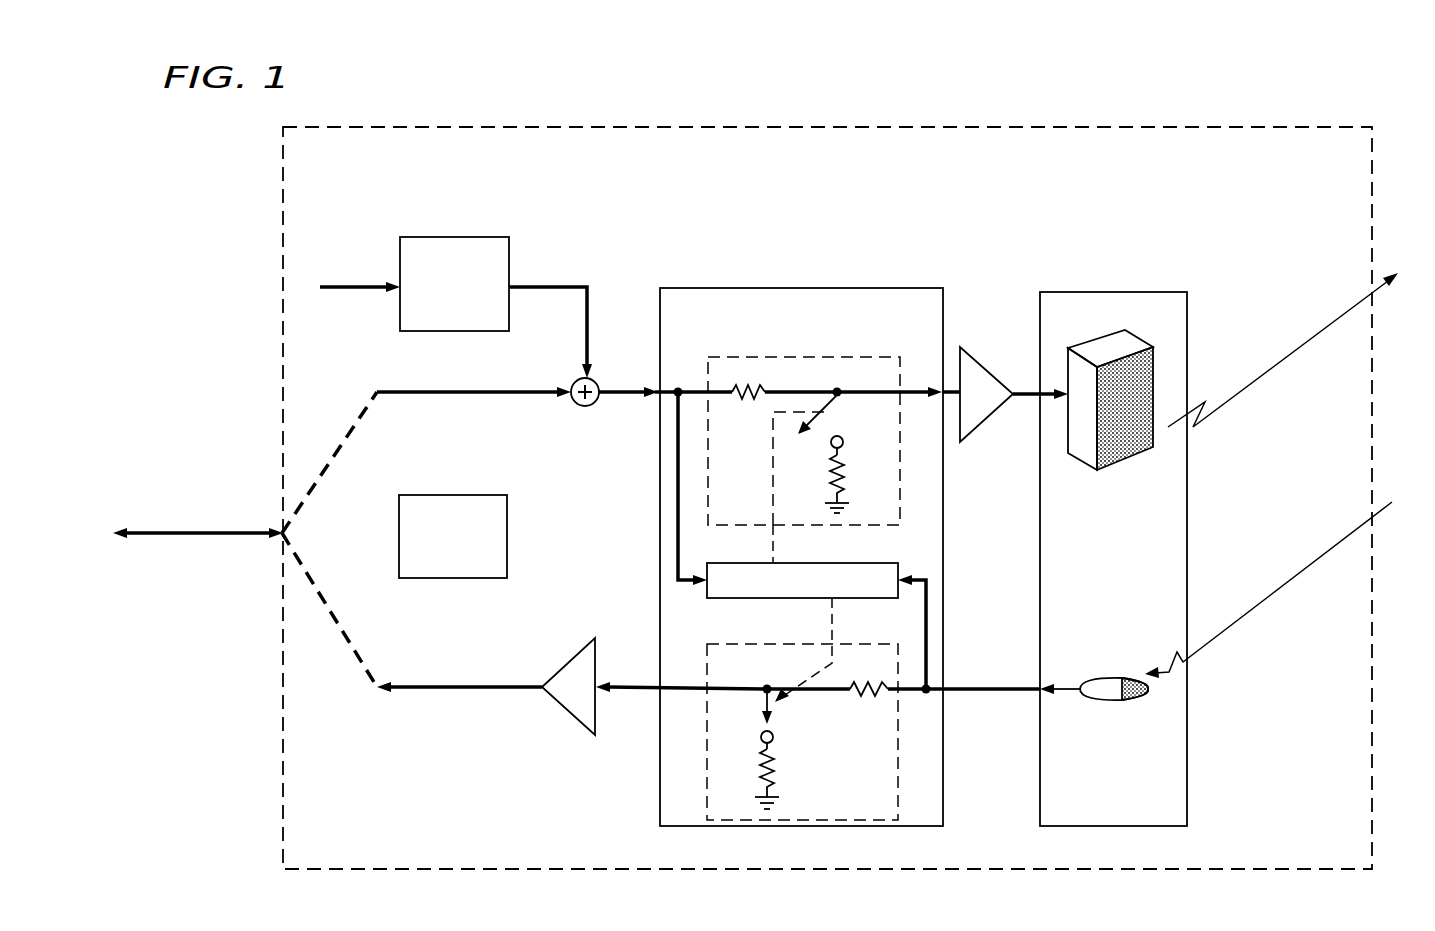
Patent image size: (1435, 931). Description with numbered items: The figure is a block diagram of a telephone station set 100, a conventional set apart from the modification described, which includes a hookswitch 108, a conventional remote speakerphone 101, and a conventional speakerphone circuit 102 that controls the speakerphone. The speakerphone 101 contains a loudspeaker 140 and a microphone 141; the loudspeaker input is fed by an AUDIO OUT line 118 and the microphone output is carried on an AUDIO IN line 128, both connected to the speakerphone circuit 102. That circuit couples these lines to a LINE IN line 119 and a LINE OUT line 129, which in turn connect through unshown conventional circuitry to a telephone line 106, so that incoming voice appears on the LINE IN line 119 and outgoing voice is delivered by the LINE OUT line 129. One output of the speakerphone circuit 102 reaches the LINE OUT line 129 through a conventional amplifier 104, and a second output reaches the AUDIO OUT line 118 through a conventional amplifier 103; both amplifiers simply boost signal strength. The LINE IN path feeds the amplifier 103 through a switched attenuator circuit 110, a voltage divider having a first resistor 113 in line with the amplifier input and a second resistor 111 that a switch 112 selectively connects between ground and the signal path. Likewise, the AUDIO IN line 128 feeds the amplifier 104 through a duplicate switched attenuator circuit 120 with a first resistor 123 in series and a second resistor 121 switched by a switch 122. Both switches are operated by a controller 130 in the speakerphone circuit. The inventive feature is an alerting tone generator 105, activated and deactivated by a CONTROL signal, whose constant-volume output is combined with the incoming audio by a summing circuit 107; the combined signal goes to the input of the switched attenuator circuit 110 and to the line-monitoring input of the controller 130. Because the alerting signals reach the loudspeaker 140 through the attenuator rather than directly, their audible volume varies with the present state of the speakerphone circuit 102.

The telephone station set 100 is at (827, 498).
The speakerphone 101 is at (1102, 292).
The speakerphone circuit 102 is at (801, 557).
The amplifier 103 is at (978, 360).
The amplifier 104 is at (572, 660).
The alerting tone generator 105 is at (466, 237).
The telephone line 106 is at (198, 496).
The summing circuit 107 is at (580, 405).
The hookswitch 108 is at (474, 495).
The switched attenuator circuit 110 is at (700, 392).
The second resistor 111 is at (846, 471).
The switch 112 is at (830, 411).
The first resistor 113 is at (748, 386).
The AUDIO OUT line 118 is at (1031, 400).
The LINE IN line 119 is at (426, 460).
The switched attenuator circuit 120 is at (762, 644).
The second resistor 121 is at (776, 762).
The switch 122 is at (770, 700).
The first resistor 123 is at (858, 700).
The AUDIO IN line 128 is at (818, 668).
The LINE OUT line 129 is at (412, 637).
The controller 130 is at (862, 563).
The loudspeaker 140 is at (1082, 460).
The microphone 141 is at (1106, 677).